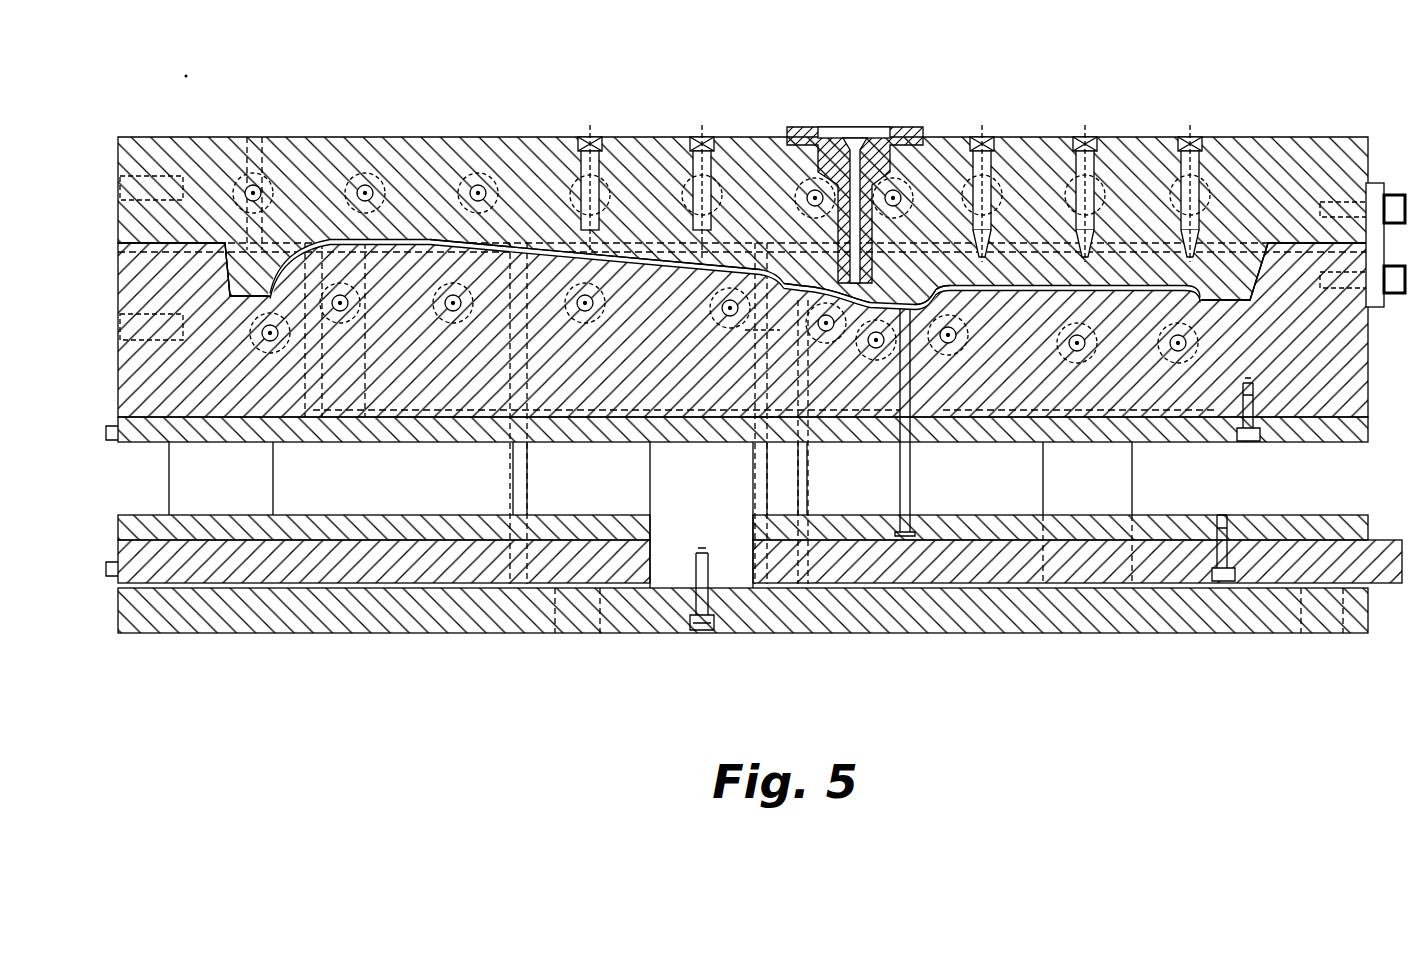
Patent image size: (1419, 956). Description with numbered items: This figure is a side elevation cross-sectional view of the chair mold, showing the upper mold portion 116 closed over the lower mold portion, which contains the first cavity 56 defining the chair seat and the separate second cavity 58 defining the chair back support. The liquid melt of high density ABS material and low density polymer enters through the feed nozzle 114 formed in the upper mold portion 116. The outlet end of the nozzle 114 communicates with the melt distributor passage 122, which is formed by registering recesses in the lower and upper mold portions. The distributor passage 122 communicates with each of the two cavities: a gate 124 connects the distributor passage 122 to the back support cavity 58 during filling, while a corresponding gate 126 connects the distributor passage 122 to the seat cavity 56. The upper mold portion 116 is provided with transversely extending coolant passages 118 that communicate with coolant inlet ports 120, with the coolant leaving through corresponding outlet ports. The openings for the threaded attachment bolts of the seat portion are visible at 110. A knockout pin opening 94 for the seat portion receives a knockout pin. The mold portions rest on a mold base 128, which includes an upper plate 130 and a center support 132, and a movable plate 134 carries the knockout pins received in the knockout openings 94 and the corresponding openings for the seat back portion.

The first cavity 56 is at (675, 272).
The second cavity 58 is at (1133, 282).
The knockout pin opening 94 is at (528, 352).
The openings for threaded attachment bolts 110 is at (417, 243).
The feed nozzle 114 is at (903, 140).
The upper mold portion 116 is at (763, 160).
The coolant passages 118 is at (687, 197).
The coolant inlet ports 120 is at (698, 138).
The melt distributor passage 122 is at (890, 278).
The gate 124 is at (945, 284).
The gate 126 is at (752, 343).
The mold base 128 is at (396, 606).
The upper plate 130 is at (553, 527).
The center support 132 is at (693, 497).
The movable plate 134 is at (560, 432).